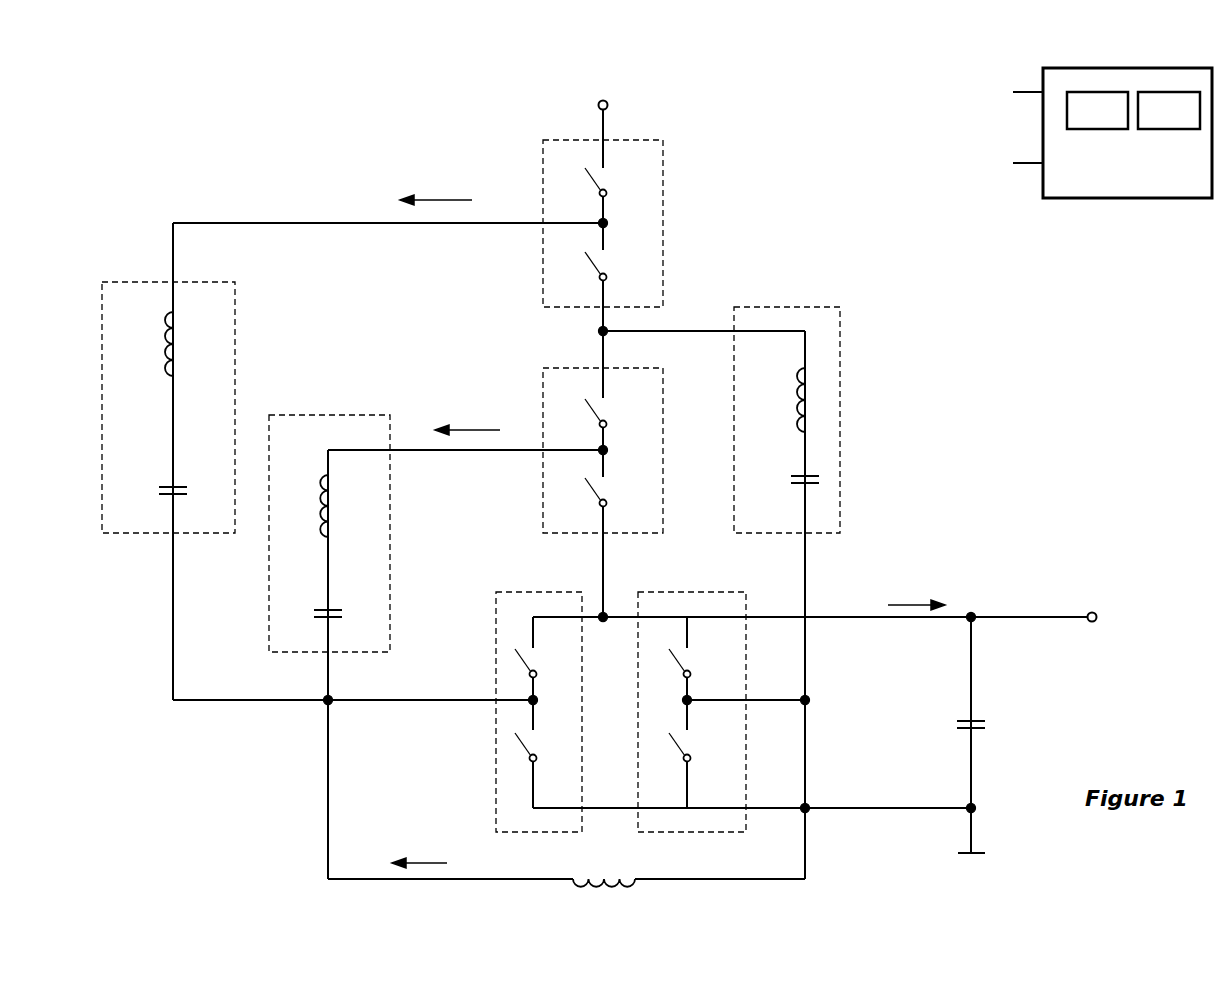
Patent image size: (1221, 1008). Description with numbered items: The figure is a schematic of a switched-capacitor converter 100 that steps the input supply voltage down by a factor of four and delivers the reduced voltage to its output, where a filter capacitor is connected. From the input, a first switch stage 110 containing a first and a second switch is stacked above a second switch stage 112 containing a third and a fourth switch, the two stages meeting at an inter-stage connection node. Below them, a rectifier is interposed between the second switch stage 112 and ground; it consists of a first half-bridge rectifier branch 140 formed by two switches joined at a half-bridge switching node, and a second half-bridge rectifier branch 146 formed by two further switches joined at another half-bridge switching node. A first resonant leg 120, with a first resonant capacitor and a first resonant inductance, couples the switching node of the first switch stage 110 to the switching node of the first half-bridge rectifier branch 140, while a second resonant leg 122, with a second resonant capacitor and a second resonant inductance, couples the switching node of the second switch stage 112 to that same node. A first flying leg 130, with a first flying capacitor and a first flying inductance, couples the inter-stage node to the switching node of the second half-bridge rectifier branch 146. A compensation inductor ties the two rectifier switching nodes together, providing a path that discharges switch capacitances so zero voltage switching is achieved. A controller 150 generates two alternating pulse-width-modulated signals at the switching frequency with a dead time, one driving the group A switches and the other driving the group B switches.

The switched-capacitor converter 100 is at (214, 104).
The first switch stage 110 is at (603, 213).
The second switch stage 112 is at (603, 440).
The first resonant leg 120 is at (168, 397).
The second resonant leg 122 is at (329, 523).
The first flying leg 130 is at (787, 410).
The first half-bridge rectifier branch 140 is at (539, 702).
The second half-bridge rectifier branch 146 is at (692, 702).
The controller 150 is at (990, 123).